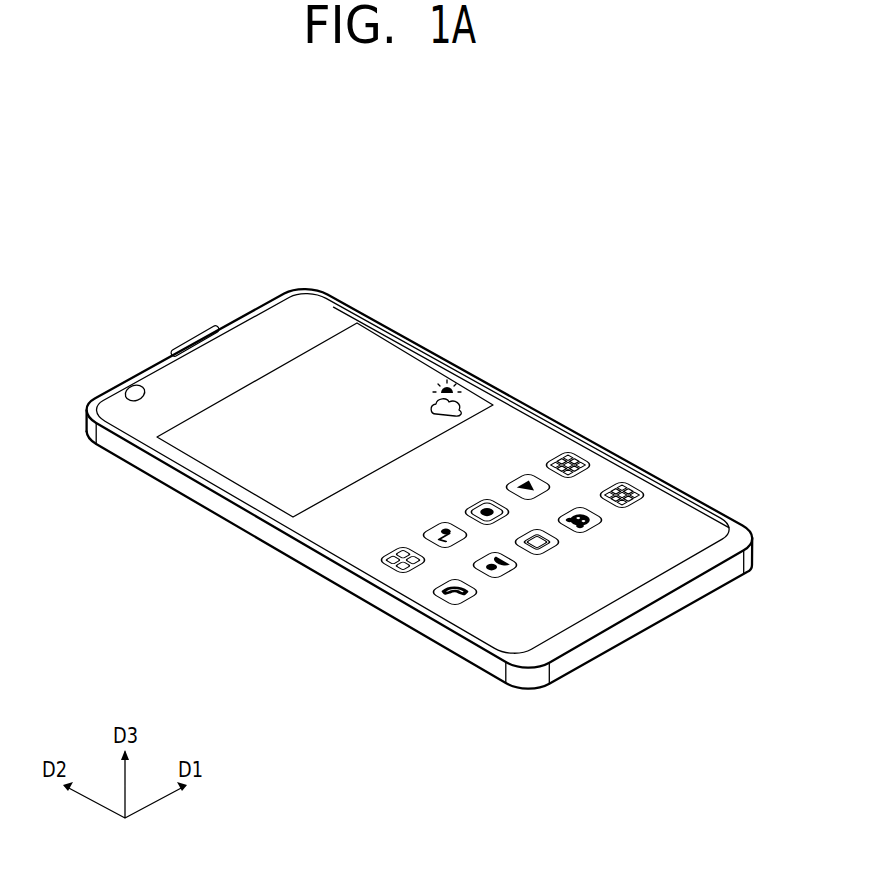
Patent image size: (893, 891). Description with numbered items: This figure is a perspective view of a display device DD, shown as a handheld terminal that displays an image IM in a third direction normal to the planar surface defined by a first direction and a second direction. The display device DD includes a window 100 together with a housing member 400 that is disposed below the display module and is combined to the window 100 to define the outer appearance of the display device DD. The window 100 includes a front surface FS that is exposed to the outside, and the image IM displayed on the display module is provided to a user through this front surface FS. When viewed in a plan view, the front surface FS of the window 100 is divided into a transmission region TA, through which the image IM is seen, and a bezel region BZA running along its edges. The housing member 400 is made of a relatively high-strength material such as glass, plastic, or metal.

The display device DD is at (702, 261).
The window 100 is at (199, 483).
The housing member 400 is at (262, 530).
The front surface FS is at (267, 198).
The transmission region TA is at (257, 336).
The bezel region BZA is at (279, 291).
The image IM is at (412, 352).